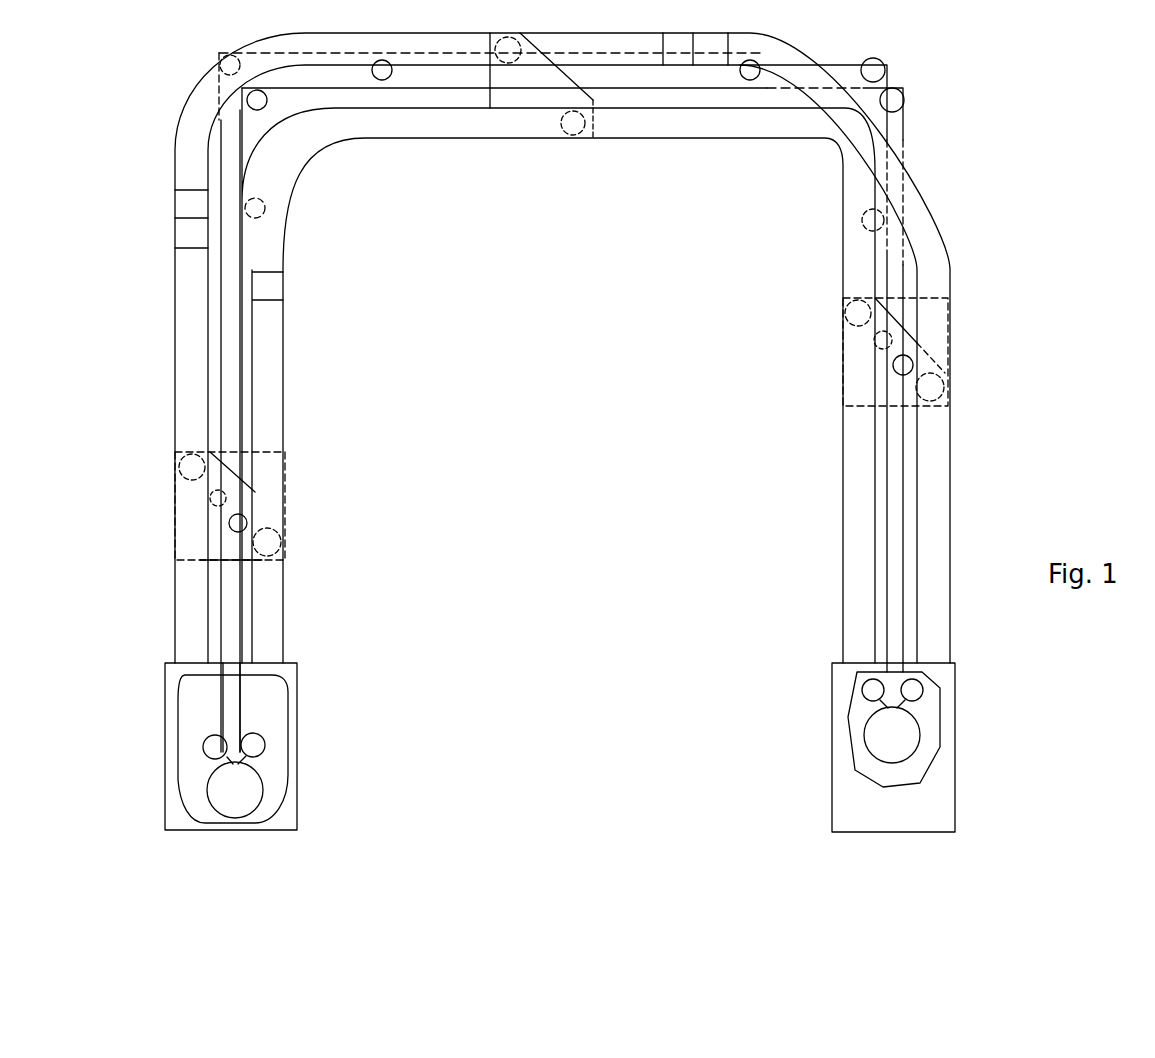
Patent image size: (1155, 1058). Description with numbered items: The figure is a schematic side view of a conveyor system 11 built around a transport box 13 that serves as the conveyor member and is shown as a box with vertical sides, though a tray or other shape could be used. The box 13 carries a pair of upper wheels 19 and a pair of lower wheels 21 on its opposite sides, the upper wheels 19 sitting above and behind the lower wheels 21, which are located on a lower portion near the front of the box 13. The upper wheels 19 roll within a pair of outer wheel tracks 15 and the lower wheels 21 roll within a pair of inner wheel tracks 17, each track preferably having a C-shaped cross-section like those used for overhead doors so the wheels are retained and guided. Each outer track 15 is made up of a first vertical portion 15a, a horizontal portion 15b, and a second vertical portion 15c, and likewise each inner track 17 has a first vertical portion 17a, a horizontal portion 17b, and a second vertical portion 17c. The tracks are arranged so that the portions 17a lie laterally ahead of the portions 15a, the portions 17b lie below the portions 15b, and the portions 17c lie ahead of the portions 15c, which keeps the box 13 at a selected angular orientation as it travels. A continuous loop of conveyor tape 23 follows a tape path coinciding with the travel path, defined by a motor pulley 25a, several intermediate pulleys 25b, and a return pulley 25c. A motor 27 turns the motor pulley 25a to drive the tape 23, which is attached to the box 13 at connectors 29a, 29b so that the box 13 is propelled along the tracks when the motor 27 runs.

The conveyor system 11 is at (1011, 183).
The transport box 13 is at (510, 98).
The outer wheel track 15 is at (168, 290).
The first vertical portion 15a is at (182, 356).
The horizontal portion 15b is at (443, 64).
The second vertical portion 15c is at (855, 473).
The inner wheel track 17 is at (302, 398).
The first vertical portion 17a is at (283, 448).
The horizontal portion 17b is at (622, 133).
The second vertical portion 17c is at (935, 523).
The upper wheel 19 is at (182, 470).
The lower wheel 21 is at (283, 542).
The conveyor tape 23 is at (243, 700).
The motor pulley 25a is at (247, 773).
The intermediate pulley 25b is at (218, 60).
The return pulley 25c is at (888, 737).
The motor 27 is at (203, 797).
The connector 29a is at (212, 500).
The connector 29b is at (232, 528).